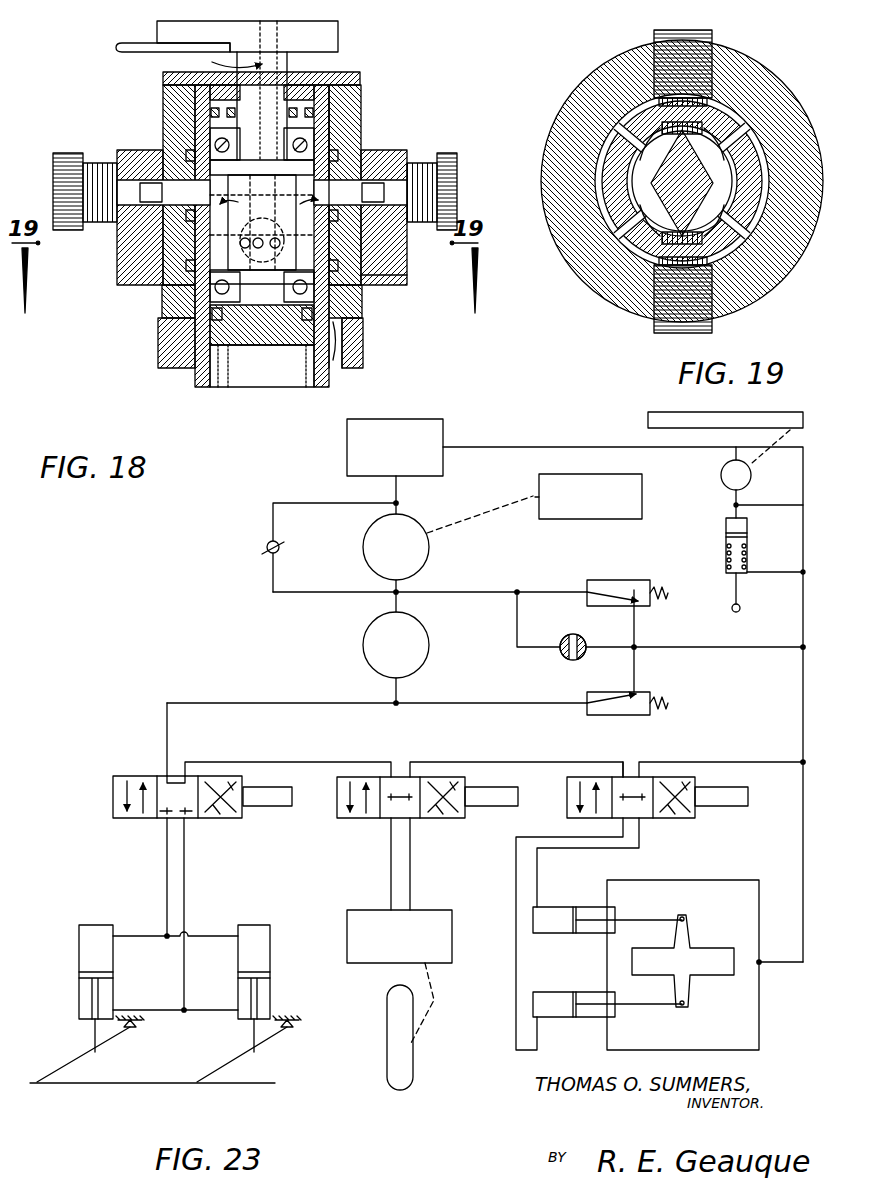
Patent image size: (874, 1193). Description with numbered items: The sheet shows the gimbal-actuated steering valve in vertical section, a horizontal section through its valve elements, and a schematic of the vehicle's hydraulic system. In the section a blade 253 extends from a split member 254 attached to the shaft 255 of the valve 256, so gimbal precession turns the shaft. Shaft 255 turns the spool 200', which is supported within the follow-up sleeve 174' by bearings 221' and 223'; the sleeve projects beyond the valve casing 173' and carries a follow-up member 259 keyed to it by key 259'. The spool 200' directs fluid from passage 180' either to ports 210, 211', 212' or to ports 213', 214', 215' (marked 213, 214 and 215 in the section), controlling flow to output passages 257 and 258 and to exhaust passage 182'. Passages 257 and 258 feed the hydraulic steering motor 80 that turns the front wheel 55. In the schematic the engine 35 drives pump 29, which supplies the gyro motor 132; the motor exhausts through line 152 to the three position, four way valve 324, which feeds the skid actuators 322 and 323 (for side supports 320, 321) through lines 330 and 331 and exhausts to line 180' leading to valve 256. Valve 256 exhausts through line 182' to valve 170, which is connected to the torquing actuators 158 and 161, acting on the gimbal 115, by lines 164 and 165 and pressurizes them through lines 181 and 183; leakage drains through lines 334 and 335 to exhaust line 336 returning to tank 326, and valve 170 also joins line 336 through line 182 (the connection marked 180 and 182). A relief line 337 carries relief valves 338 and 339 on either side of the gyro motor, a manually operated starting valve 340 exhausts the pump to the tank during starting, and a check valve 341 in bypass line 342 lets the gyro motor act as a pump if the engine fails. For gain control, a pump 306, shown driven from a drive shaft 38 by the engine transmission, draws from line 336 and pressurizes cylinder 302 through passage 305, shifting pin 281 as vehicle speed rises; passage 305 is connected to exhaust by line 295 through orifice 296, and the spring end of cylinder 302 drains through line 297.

In FIG. 18, the blade 253 is at (128, 43).
In FIG. 18, the split member 254 is at (318, 32).
In FIG. 18, the shaft 255 is at (290, 64).
In FIG. 18, the follow-up sleeve 174' is at (367, 170).
In FIG. 19, the follow-up sleeve 174' is at (701, 181).
In FIG. 18, the valve 256 is at (362, 124).
In FIG. 19, the valve 256 is at (776, 74).
In FIG. 23, the valve 256 is at (430, 822).
In FIG. 18, the bearing 223' is at (311, 141).
In FIG. 18, the passage 180' is at (436, 179).
In FIG. 23, the passage 180' is at (288, 754).
In FIG. 18, the spool 200' is at (264, 222).
In FIG. 19, the spool 200' is at (682, 183).
In FIG. 18, the bearing 221' is at (302, 275).
In FIG. 18, the valve casing 173' is at (406, 282).
In FIG. 18, the output exhaust passage 182' is at (82, 212).
In FIG. 23, the output exhaust passage 182' is at (516, 756).
In FIG. 18, the vane 215 is at (232, 317).
In FIG. 18, the vane 213 is at (291, 317).
In FIG. 18, the vane block 214 is at (262, 325).
In FIG. 18, the follow-up member 259 is at (287, 340).
In FIG. 18, the key 259' is at (353, 358).
In FIG. 19, the output passage 257 is at (712, 40).
In FIG. 23, the output passage 257 is at (389, 858).
In FIG. 19, the output passage 258 is at (660, 333).
In FIG. 23, the output passage 258 is at (412, 868).
In FIG. 19, the port 214' is at (715, 106).
In FIG. 19, the port 215' is at (636, 125).
In FIG. 19, the port 213' is at (742, 128).
In FIG. 19, the port 212' is at (650, 247).
In FIG. 19, the port 211' is at (637, 245).
In FIG. 19, the vane 210 is at (716, 250).
In FIG. 23, the tank 326 is at (445, 432).
In FIG. 23, the exhaust line 336 is at (594, 447).
In FIG. 23, the drive shaft 38 is at (652, 412).
In FIG. 23, the pump 306 is at (720, 480).
In FIG. 23, the line 295 is at (748, 505).
In FIG. 23, the passage 305 is at (728, 508).
In FIG. 23, the orifice 296 is at (760, 512).
In FIG. 23, the cylinder 302 is at (722, 570).
In FIG. 23, the drain line 297 is at (770, 572).
In FIG. 23, the pin 281 is at (731, 611).
In FIG. 23, the engine 35 is at (642, 500).
In FIG. 23, the pump 29 is at (418, 524).
In FIG. 23, the bypass line 342 is at (290, 503).
In FIG. 23, the check valve 341 is at (267, 544).
In FIG. 23, the relief line 337 is at (490, 592).
In FIG. 23, the gyro motor 132 is at (426, 632).
In FIG. 23, the line 152 is at (240, 694).
In FIG. 23, the relief valve 338 is at (632, 584).
In FIG. 23, the starting valve 340 is at (560, 658).
In FIG. 23, the relief valve 339 is at (640, 715).
In FIG. 23, the pilot line 180 is at (614, 756).
In FIG. 23, the line 182 is at (722, 751).
In FIG. 23, the valve 324 is at (110, 806).
In FIG. 23, the line 330 is at (166, 835).
In FIG. 23, the line 331 is at (186, 870).
In FIG. 23, the hydraulic actuator 323 is at (100, 925).
In FIG. 23, the hydraulic actuator 322 is at (258, 930).
In FIG. 23, the lever 321 is at (82, 1058).
In FIG. 23, the lever 320 is at (262, 1058).
In FIG. 23, the hydraulic motor 80 is at (454, 960).
In FIG. 23, the front wheel 55 is at (412, 1080).
In FIG. 23, the valve 170 is at (694, 820).
In FIG. 23, the line 181 is at (618, 837).
In FIG. 23, the line 183 is at (641, 846).
In FIG. 23, the line 165 is at (536, 903).
In FIG. 23, the actuator motor 161 is at (597, 934).
In FIG. 23, the actuator motor 158 is at (590, 992).
In FIG. 23, the line 164 is at (540, 1044).
In FIG. 23, the gimbal 115 is at (716, 976).
In FIG. 23, the drain line 335 is at (684, 880).
In FIG. 23, the drain line 334 is at (692, 1038).